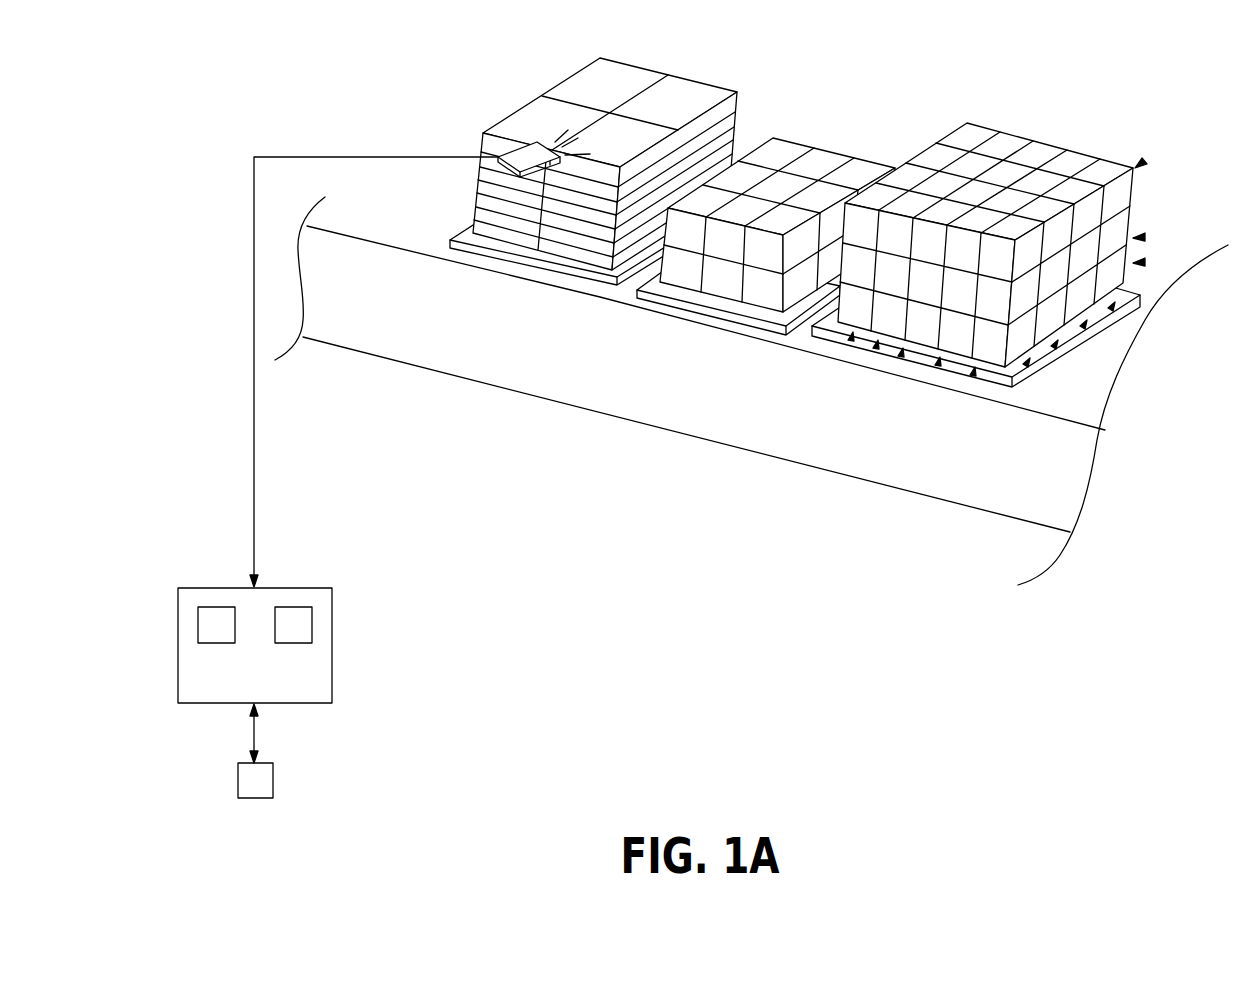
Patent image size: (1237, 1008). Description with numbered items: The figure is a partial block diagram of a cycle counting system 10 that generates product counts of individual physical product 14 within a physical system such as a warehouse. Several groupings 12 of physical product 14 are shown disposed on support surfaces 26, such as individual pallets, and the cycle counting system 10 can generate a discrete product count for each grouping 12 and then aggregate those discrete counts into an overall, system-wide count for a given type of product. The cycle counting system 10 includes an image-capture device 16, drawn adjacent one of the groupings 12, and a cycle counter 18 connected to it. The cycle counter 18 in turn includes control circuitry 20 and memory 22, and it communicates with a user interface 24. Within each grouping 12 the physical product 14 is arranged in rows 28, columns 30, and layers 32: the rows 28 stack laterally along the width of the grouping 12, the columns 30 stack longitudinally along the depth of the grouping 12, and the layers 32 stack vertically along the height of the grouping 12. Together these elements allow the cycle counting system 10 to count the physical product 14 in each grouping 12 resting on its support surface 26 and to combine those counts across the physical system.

The cycle counting system 10 is at (607, 565).
The grouping 12 is at (760, 108).
The physical product 14 is at (495, 207).
The image-capture device 16 is at (525, 135).
The cycle counter 18 is at (392, 690).
The control circuitry 20 is at (223, 607).
The memory 22 is at (288, 607).
The user interface 24 is at (238, 778).
The support surface 26 is at (488, 253).
The row 28 is at (973, 376).
The column 30 is at (1111, 310).
The layer 32 is at (1145, 161).